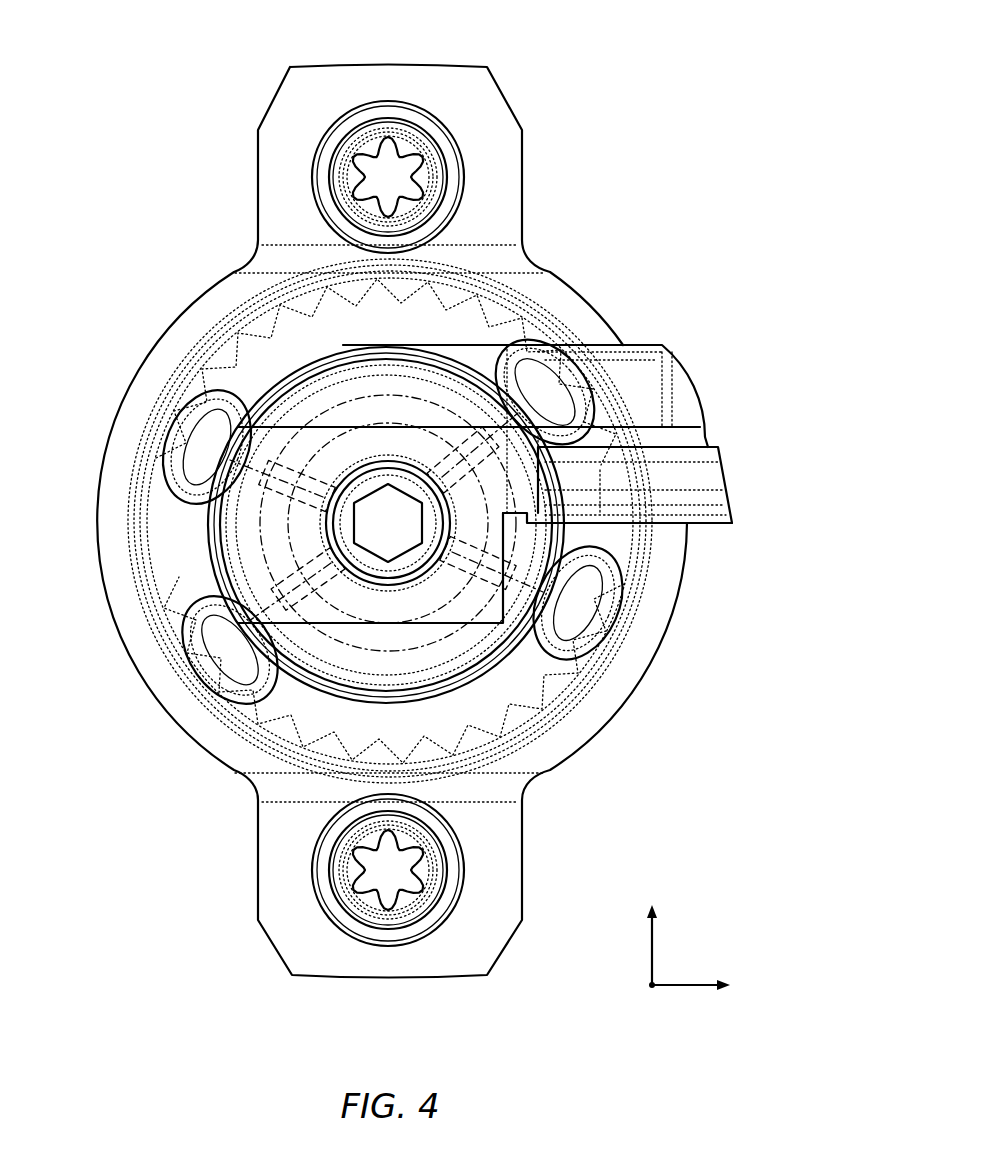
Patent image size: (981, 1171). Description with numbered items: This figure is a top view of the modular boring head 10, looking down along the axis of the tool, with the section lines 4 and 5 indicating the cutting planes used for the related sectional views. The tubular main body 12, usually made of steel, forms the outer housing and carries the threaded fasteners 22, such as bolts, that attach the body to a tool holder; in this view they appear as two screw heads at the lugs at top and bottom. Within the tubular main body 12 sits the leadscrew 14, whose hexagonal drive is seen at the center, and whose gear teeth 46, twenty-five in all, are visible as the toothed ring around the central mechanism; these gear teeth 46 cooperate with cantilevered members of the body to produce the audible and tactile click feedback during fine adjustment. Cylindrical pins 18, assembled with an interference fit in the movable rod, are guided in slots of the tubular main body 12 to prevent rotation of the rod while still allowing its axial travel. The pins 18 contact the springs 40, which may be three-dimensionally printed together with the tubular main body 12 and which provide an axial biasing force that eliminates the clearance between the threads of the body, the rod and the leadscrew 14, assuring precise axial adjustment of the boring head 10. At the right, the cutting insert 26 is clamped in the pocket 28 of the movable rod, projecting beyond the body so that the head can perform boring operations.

The modular boring head 10 is at (653, 92).
The tubular main body 12 is at (163, 262).
The leadscrew 14 is at (375, 462).
The cylindrical pins 18 is at (462, 407).
The threaded fasteners 22 is at (377, 170).
The cutting insert 26 is at (695, 468).
The pocket 28 is at (748, 524).
The springs 40 is at (188, 357).
The gear teeth 46 is at (563, 760).
The section line 4- 4 is at (495, 330).
The section line 5- 5 is at (110, 410).